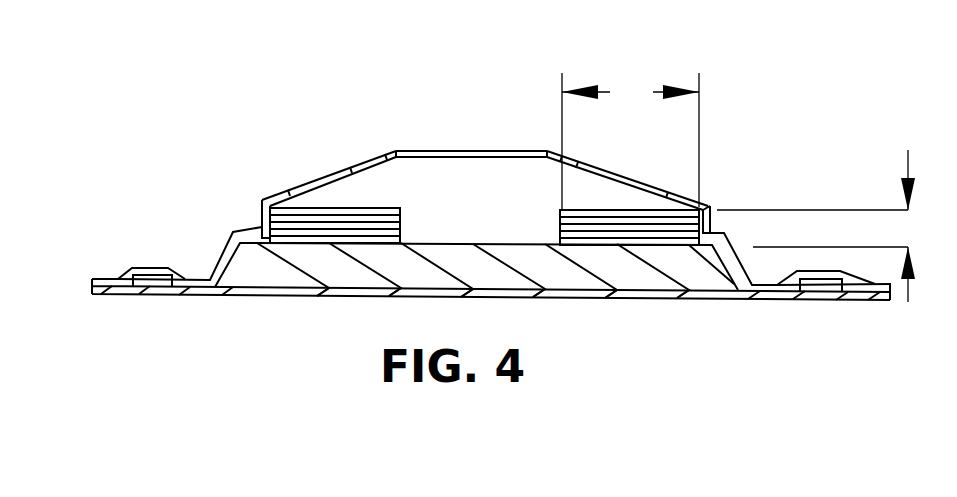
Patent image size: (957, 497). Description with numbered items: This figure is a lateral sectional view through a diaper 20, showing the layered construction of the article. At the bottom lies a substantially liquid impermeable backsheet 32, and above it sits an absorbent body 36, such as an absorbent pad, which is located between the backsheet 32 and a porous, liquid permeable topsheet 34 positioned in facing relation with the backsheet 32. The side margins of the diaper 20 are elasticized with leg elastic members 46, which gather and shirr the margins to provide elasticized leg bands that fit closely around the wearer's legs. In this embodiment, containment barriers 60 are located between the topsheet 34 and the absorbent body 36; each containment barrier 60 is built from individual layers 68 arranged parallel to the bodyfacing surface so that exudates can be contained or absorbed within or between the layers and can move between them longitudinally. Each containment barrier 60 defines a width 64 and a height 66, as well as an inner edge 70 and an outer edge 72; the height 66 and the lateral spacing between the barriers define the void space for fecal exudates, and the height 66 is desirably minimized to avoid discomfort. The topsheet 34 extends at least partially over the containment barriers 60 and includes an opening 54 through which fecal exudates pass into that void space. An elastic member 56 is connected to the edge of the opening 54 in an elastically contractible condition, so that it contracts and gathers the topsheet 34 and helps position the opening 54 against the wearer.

The diaper 20 is at (139, 61).
The backsheet 32 is at (150, 296).
The topsheet 34 is at (105, 277).
The absorbent body 36 is at (283, 297).
The leg elastic members 46 is at (155, 277).
The opening 54 is at (468, 150).
The elastic member 56 is at (380, 170).
The containment barrier 60 is at (307, 206).
The width 64 is at (630, 141).
The height 66 is at (821, 212).
The layers 68 is at (402, 222).
The inner edge 70 is at (560, 222).
The outer edge 72 is at (708, 207).